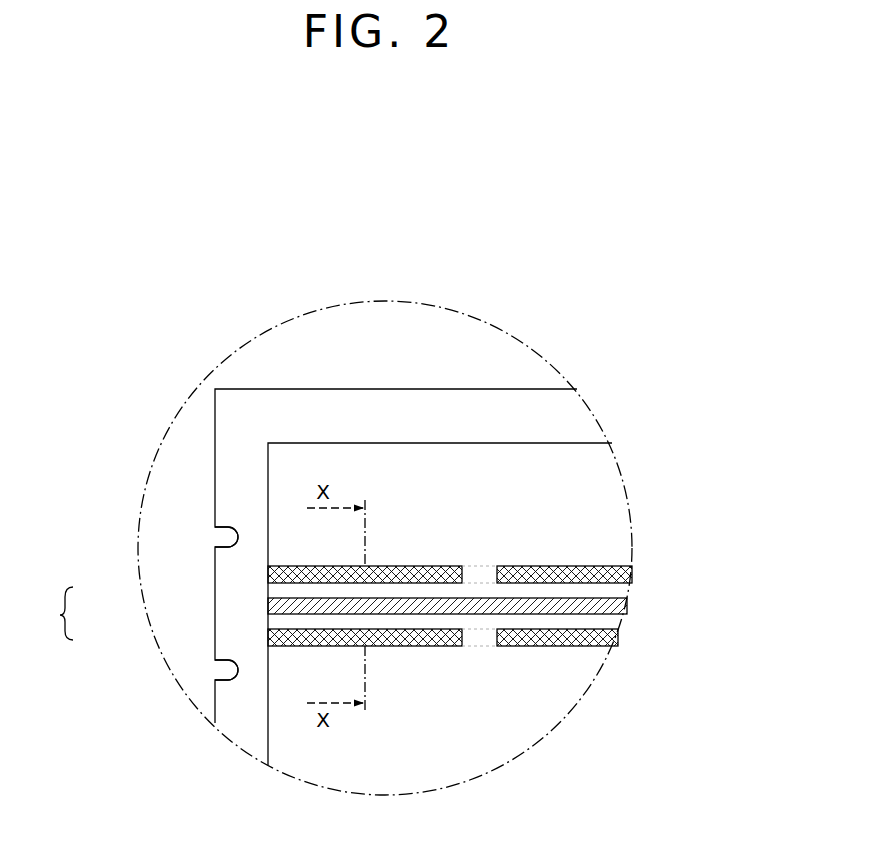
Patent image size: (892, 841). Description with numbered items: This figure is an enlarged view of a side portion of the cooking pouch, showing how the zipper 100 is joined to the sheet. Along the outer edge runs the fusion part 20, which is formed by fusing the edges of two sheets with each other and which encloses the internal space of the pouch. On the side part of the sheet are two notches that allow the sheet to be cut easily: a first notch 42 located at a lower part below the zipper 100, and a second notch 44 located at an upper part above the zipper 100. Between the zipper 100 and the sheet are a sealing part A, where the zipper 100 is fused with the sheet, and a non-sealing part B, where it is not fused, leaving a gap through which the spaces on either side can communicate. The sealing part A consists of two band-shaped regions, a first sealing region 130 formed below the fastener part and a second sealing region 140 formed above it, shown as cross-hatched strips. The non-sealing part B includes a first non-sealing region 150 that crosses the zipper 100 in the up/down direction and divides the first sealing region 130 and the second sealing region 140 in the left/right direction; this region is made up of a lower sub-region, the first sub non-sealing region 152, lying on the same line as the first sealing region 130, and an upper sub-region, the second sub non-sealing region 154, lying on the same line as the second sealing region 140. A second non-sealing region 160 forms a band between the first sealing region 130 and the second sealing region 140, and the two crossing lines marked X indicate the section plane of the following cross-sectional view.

The fusion part 20 is at (377, 408).
The first notch 42 is at (226, 671).
The second notch 44 is at (226, 537).
The zipper 100 is at (616, 550).
The first sealing region 130 is at (266, 633).
The second sealing region 140 is at (266, 573).
The first non-sealing region 150 is at (495, 566).
The (1-1)th non-sealing region 152 is at (488, 638).
The (1-2)th non-sealing region 154 is at (488, 568).
The second non-sealing region 160 is at (607, 596).
The sealing part A is at (55, 613).
The non-sealing part B is at (599, 622).